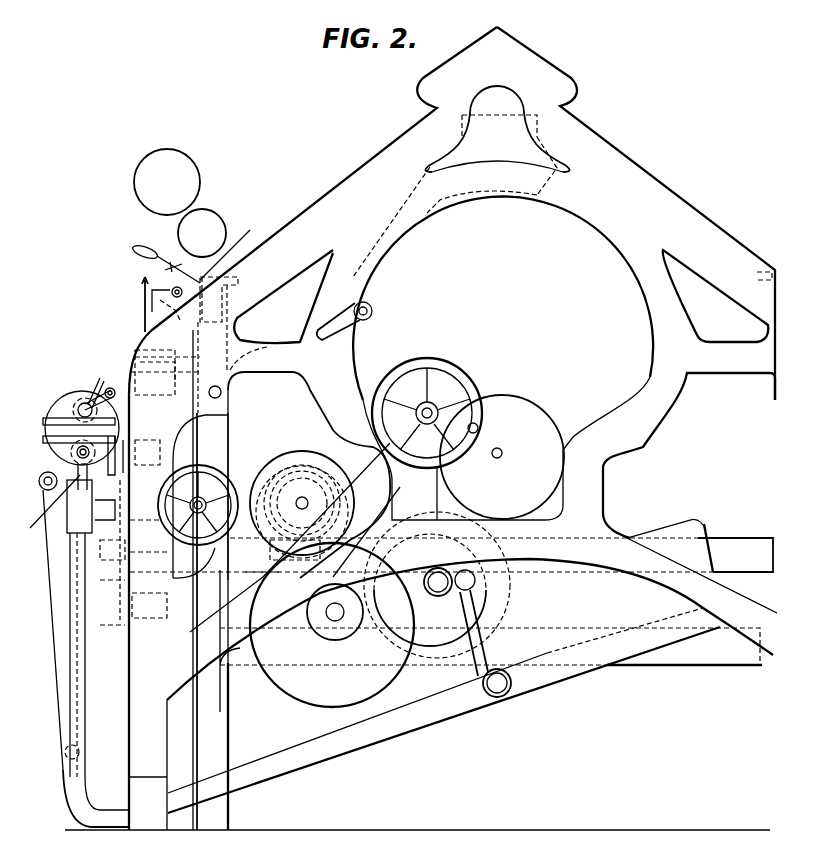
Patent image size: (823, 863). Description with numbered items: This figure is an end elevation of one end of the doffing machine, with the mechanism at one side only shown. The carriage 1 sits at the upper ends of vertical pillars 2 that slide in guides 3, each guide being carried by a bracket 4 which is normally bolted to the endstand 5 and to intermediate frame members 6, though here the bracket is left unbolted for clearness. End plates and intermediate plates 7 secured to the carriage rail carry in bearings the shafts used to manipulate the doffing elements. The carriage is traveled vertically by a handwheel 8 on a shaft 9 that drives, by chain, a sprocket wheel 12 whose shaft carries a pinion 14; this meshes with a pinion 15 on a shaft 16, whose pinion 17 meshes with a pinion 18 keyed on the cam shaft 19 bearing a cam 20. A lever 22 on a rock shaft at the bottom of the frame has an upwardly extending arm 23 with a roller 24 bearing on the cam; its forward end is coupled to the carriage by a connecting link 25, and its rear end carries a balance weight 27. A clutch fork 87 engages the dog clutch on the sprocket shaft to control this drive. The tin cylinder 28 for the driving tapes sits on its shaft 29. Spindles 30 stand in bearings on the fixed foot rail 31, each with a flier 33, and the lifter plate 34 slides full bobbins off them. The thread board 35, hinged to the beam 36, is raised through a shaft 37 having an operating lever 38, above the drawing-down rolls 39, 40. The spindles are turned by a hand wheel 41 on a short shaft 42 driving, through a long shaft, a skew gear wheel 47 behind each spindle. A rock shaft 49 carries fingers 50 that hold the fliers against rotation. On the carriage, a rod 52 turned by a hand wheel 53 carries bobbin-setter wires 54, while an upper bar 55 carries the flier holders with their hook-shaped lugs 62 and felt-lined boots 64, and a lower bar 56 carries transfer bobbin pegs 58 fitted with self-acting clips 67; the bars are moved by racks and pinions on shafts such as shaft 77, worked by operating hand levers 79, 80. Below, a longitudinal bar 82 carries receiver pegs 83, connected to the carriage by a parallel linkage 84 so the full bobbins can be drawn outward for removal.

The carriage 1 is at (40, 380).
The vertical pillars 2 is at (85, 655).
The guides 3 is at (79, 498).
The bracket 4 is at (104, 513).
The endstand 5 is at (420, 428).
The intermediate frame members 6 is at (212, 619).
The end plates and intermediate plates 7 is at (60, 405).
The handwheel 8 is at (432, 364).
The shaft 9 is at (438, 403).
The sprocket wheel 12 is at (300, 451).
The pinion 14 is at (310, 504).
The pinion 15 is at (346, 526).
The shaft 16 is at (330, 610).
The pinion 17 is at (312, 638).
The pinion 18 is at (405, 655).
The cam shaft 19 is at (432, 585).
The cam 20 is at (380, 605).
The lever 22 is at (65, 790).
The upwardly extending arm 23 is at (470, 605).
The roller 24 is at (458, 572).
The connecting link 25 is at (55, 613).
The balance weight 27 is at (673, 520).
The tin cylinder 28 is at (502, 457).
The shaft 29 is at (503, 452).
The spindles 30 is at (209, 320).
The foot rail 31 is at (149, 605).
The flier 33 is at (143, 305).
The lifter plate 34 is at (164, 360).
The thread board 35 is at (155, 252).
The beam 36 is at (170, 258).
The shaft 37 is at (372, 312).
The operating lever 38 is at (345, 333).
The drawing-down roll 39 is at (202, 233).
The drawing-down roll 40 is at (167, 182).
The hand wheel 41 is at (225, 480).
The short shaft 42 is at (300, 503).
The skew gear wheel 47 is at (145, 534).
The rock shaft 49 is at (232, 245).
The fingers 50 is at (168, 313).
The rod or shaft 52 is at (112, 388).
The hand wheel 53 is at (90, 395).
The wires 54 is at (95, 375).
The upper bar 55 is at (48, 420).
The lower bar 56 is at (70, 455).
The transfer bobbin pegs 58 is at (149, 443).
The hook-shaped lugs 62 is at (150, 405).
The boot or ring 64 is at (46, 509).
The self-acting clip 67 is at (130, 462).
The shaft 77 is at (48, 440).
The operating hand lever 79 is at (88, 400).
The operating hand lever 80 is at (70, 480).
The longitudinal bar 82 is at (109, 591).
The receiver pegs 83 is at (109, 559).
The parallel linkage 84 is at (109, 613).
The clutch fork 87 is at (342, 508).